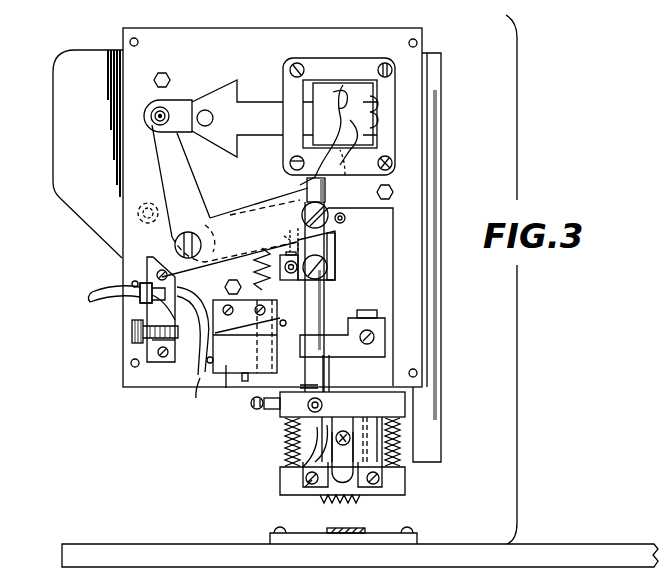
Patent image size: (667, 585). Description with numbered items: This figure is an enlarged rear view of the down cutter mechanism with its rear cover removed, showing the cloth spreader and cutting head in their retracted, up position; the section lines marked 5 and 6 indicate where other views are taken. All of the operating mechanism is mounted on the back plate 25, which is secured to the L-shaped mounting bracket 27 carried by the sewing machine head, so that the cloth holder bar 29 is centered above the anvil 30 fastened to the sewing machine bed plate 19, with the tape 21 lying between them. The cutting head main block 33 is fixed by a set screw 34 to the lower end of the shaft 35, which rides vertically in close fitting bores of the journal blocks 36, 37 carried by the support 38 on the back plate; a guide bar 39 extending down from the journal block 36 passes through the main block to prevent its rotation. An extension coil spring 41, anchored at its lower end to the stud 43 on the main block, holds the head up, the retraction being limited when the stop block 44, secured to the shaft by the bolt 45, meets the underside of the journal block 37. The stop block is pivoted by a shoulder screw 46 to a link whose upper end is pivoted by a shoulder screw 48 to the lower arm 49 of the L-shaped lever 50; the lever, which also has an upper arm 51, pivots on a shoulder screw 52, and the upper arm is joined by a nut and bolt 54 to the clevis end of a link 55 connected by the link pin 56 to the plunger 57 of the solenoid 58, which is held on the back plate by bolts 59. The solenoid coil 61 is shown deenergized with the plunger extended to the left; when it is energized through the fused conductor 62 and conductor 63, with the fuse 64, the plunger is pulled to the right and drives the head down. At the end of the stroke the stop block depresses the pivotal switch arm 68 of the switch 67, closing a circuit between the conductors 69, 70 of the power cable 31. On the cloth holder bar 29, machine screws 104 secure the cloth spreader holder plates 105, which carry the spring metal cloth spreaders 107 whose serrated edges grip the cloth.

The section line 5- 5 is at (58, 14).
The section line 6- 6 is at (342, 582).
The sewing machine bed plate 19 is at (112, 543).
The tape 21 is at (366, 530).
The back plate 25 is at (128, 85).
The L-shaped mounting bracket 27 is at (60, 155).
The cloth holder bar 29 is at (406, 472).
The bottom plate or anvil 30 is at (420, 544).
The power cable 31 is at (100, 292).
The cutting head main block 33 is at (400, 405).
The set screw 34 is at (324, 404).
The shaft 35 is at (332, 320).
The journal block 36 is at (336, 338).
The journal block 37 is at (336, 240).
The support 38 is at (393, 242).
The guide bar 39 is at (366, 310).
The extension coil spring 41 is at (256, 260).
The stud 43 is at (256, 412).
The stop block 44 is at (336, 262).
The bolt 45 is at (290, 250).
The shoulder screw 46 is at (327, 268).
The shoulder screw 48 is at (326, 218).
The lower arm 49 is at (222, 216).
The L-shaped lever 50 is at (153, 153).
The upper arm 51 is at (196, 165).
The shoulder screw 52 is at (182, 236).
The nut and bolt 54 is at (150, 120).
The link 55 is at (182, 100).
The link pin 56 is at (212, 112).
The plunger 57 is at (257, 100).
The solenoid 58 is at (340, 60).
The bolts 59 is at (297, 63).
The solenoid coil 61 is at (363, 92).
The fused conductor 62 is at (300, 183).
The conductor 63 is at (167, 258).
The fuse 64 is at (132, 332).
The switch 67 is at (226, 388).
The pivotal switch arm 68 is at (246, 340).
The conductor 69 is at (200, 378).
The conductor 70 is at (190, 358).
The machine screws 104 is at (312, 488).
The cloth spreader holder plates 105 is at (306, 472).
The cloth spreaders 107 is at (346, 490).